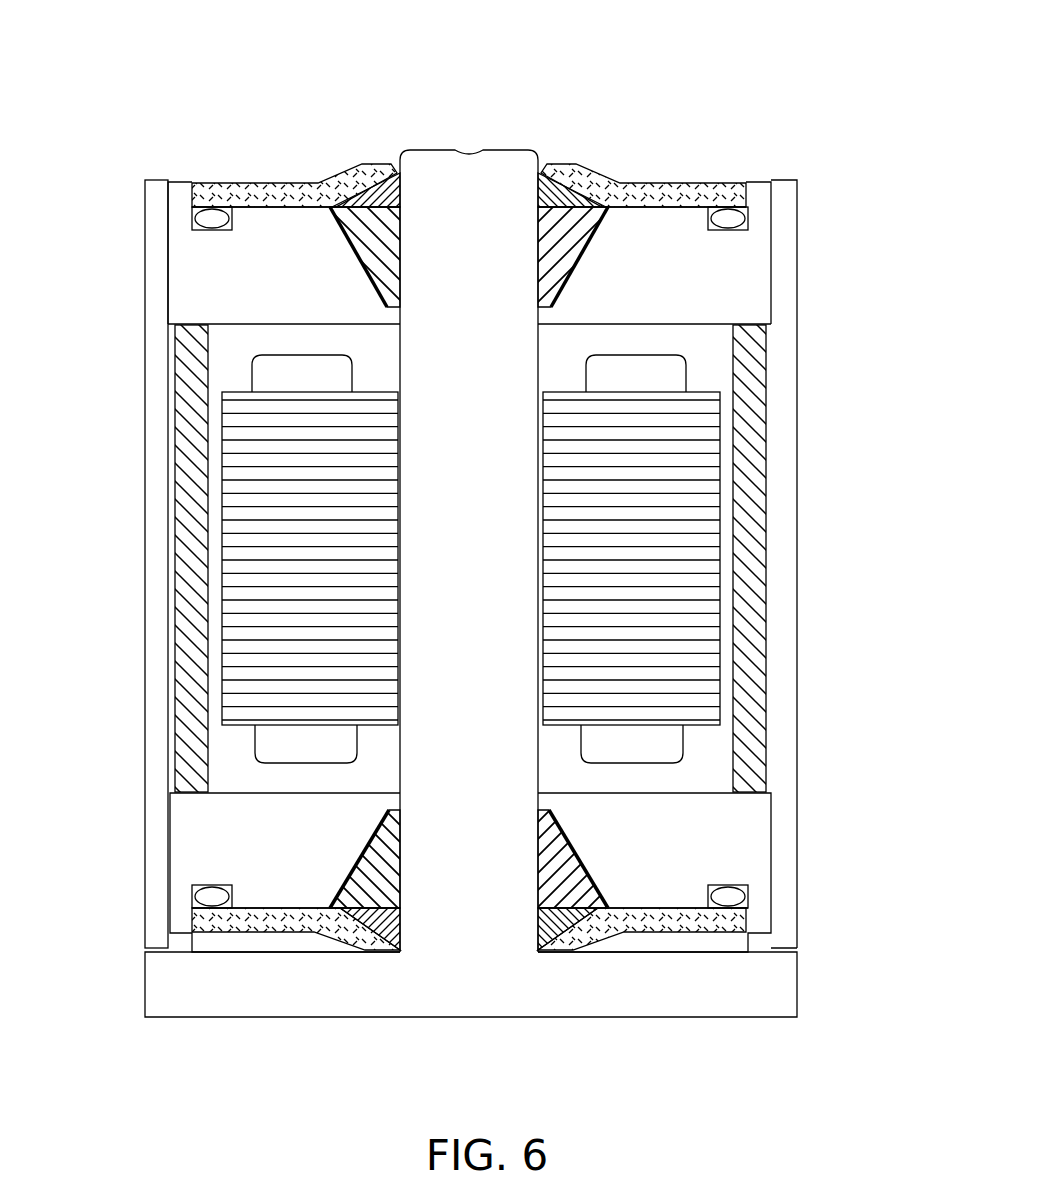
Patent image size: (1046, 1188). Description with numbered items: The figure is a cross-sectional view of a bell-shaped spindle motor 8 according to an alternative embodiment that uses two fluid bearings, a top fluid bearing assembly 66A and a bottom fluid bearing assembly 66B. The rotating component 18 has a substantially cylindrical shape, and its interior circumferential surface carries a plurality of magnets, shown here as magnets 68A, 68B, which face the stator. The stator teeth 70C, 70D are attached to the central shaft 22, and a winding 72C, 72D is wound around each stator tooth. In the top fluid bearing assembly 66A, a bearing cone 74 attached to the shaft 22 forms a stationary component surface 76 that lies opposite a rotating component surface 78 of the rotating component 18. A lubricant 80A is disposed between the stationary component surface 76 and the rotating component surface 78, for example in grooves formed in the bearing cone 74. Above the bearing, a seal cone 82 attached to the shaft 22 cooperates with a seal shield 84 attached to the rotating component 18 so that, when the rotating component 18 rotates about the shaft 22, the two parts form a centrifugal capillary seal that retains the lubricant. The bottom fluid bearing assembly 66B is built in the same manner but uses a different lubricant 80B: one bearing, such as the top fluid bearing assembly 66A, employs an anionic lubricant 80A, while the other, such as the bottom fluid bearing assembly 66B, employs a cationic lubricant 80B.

The actuator assembly 8 is at (833, 143).
The rotating component 18 is at (180, 314).
The shaft 22 is at (459, 362).
The top fluid bearing assembly 66A is at (417, 224).
The bottom fluid bearing assembly 66B is at (418, 856).
The magnet 68A is at (190, 522).
The magnet 68B is at (750, 538).
The stator tooth 70C is at (240, 620).
The stator tooth 70D is at (700, 620).
The winding 72C is at (267, 385).
The winding 72D is at (670, 383).
The bearing cone 74 is at (350, 227).
The stationary component surface 76 is at (570, 265).
The rotating component surface 78 is at (356, 253).
The lubricant 80A is at (347, 243).
The lubricant 80B is at (367, 852).
The seal cone 82 is at (398, 177).
The seal shield 84 is at (287, 190).